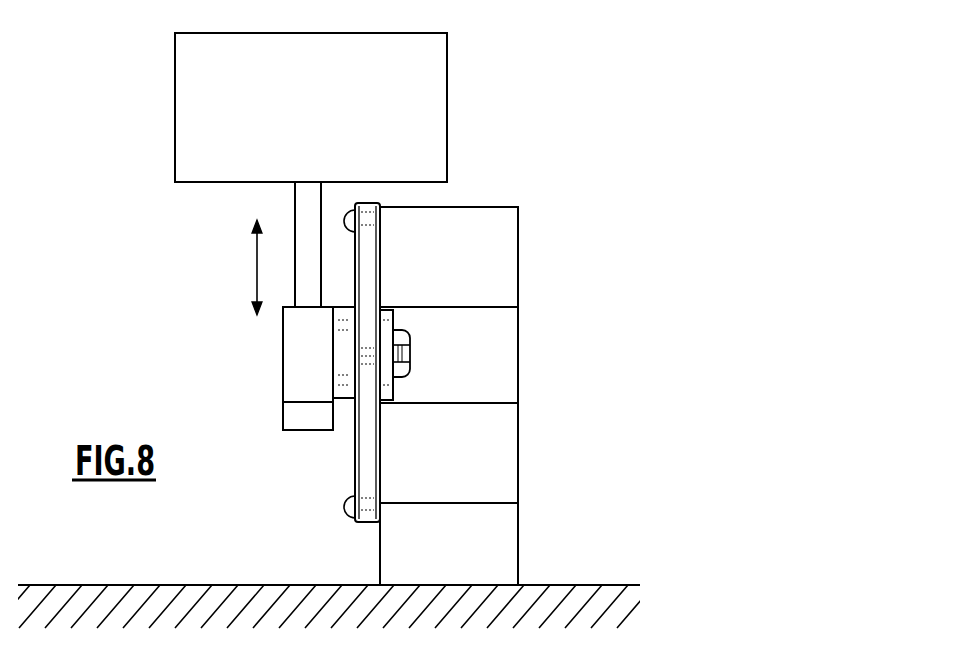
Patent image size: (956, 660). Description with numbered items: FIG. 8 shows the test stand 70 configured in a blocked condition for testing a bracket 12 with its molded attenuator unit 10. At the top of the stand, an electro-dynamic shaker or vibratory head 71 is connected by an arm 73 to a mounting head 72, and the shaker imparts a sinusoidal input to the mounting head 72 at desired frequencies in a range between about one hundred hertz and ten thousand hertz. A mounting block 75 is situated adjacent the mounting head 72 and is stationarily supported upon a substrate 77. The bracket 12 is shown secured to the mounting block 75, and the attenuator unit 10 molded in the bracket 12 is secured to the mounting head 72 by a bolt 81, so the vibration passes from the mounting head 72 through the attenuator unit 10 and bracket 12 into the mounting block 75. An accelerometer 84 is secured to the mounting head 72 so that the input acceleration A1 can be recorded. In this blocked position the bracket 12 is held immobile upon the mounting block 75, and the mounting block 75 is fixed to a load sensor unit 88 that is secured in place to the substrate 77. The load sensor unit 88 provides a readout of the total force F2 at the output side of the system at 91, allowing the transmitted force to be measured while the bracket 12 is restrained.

The attenuator unit 10 is at (342, 310).
The bracket 12 is at (355, 452).
The test stand 70 is at (238, 324).
The vibratory head 71 is at (447, 95).
The mounting head 72 is at (292, 380).
The arm 73 is at (295, 201).
The mounting block 75 is at (518, 247).
The substrate 77 is at (225, 585).
The bolt 81 is at (410, 345).
The accelerometer 84 is at (287, 420).
The load sensor unit 88 is at (518, 545).
The output side of the system 91 is at (563, 376).